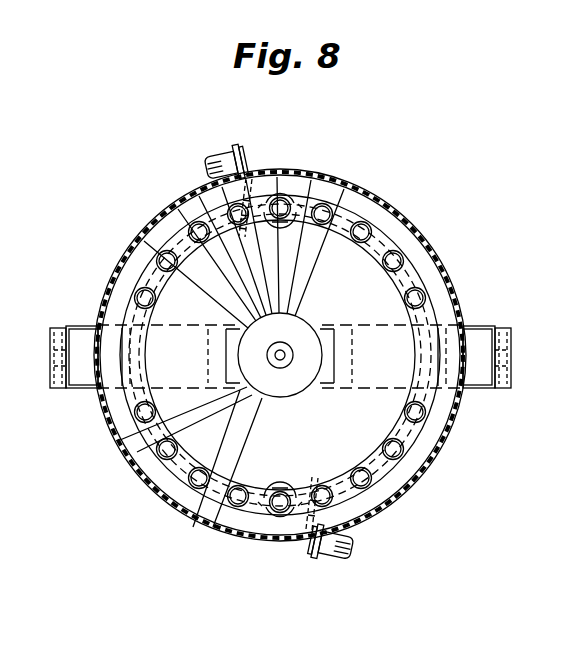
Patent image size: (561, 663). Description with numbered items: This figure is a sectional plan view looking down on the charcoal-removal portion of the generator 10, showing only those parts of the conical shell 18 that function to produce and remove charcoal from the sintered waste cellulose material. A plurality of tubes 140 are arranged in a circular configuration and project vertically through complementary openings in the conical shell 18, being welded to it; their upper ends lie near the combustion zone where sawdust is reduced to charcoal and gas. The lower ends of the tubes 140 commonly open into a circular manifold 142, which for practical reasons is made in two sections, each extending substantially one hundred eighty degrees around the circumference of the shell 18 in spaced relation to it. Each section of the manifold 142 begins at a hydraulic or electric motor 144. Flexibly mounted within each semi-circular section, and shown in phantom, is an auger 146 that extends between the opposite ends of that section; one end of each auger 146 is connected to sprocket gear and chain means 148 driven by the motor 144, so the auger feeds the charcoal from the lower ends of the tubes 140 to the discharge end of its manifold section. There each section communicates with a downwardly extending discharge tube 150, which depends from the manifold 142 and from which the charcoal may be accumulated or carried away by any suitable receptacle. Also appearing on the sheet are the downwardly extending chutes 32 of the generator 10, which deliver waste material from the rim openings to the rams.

The generator 10 is at (452, 230).
The conical shell 18 is at (172, 212).
The downwardly extending chutes 32 is at (88, 327).
The tubes 140 is at (132, 422).
The circular manifold 142 is at (373, 222).
The hydraulic or electric motor 144 is at (220, 150).
The auger 146 is at (158, 272).
The sprocket gear and chain means 148 is at (247, 172).
The discharge tube 150 is at (292, 200).